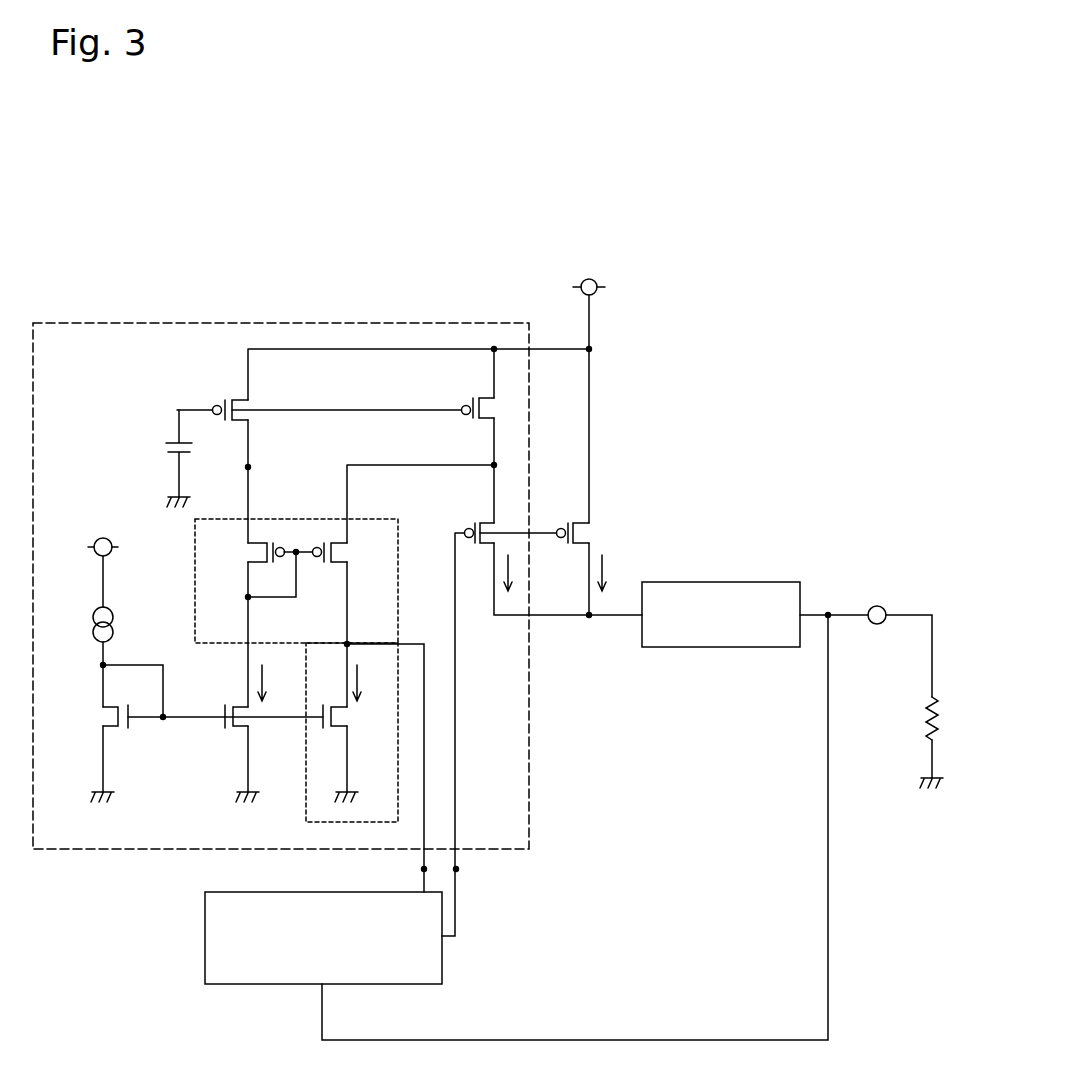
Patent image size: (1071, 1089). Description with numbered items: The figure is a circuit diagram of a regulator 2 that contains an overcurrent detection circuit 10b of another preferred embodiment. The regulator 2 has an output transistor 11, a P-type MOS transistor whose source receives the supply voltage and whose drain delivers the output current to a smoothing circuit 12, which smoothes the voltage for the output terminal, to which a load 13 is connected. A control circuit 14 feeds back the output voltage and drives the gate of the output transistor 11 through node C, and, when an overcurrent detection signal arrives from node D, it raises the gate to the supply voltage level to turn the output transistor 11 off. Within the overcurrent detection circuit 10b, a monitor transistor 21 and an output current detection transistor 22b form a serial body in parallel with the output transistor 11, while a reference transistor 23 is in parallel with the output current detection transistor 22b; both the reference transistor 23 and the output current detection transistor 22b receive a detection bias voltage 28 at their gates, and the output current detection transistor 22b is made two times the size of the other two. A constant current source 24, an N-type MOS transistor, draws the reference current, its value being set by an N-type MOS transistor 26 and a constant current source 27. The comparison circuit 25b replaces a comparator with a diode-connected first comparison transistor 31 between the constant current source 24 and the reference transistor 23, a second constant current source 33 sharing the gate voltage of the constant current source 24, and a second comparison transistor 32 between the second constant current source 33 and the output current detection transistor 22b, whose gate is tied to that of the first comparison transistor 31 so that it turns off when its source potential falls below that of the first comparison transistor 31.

The regulator 2 is at (412, 236).
The overcurrent detection circuit 10b is at (193, 322).
The output transistor 11 is at (598, 533).
The smoothing circuit 12 is at (748, 578).
The load 13 is at (902, 718).
The control circuit 14 is at (347, 938).
The monitor transistor 21 is at (481, 560).
The output current detection transistor 22b is at (465, 395).
The reference transistor 23 is at (214, 392).
The constant current source 24 is at (222, 738).
The comparison circuit 25b is at (378, 517).
The N-type MOS transistor 26 is at (95, 718).
The constant current source 27 is at (88, 625).
The detection bias voltage 28 is at (202, 453).
The first comparison transistor 31 is at (233, 556).
The second comparison transistor 32 is at (357, 557).
The second constant current source 33 is at (360, 722).